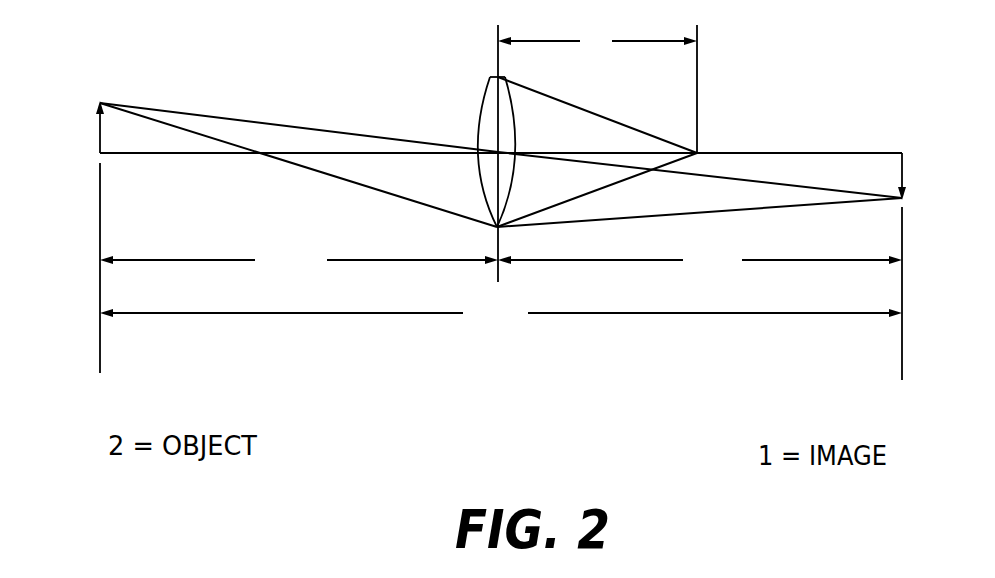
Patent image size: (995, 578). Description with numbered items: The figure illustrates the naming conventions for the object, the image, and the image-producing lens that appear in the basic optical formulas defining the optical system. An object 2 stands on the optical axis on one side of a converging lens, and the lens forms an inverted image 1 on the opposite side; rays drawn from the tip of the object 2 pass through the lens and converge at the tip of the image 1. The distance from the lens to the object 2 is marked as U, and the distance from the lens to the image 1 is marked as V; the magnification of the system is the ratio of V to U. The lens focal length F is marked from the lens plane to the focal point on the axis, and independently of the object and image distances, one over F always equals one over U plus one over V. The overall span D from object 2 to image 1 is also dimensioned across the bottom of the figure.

The image 1 is at (918, 190).
The object 2 is at (86, 147).
The lens focal length F is at (597, 42).
The distance from lens to object U is at (299, 261).
The distance from lens to image V is at (700, 261).
The object-to-image distance D is at (501, 314).